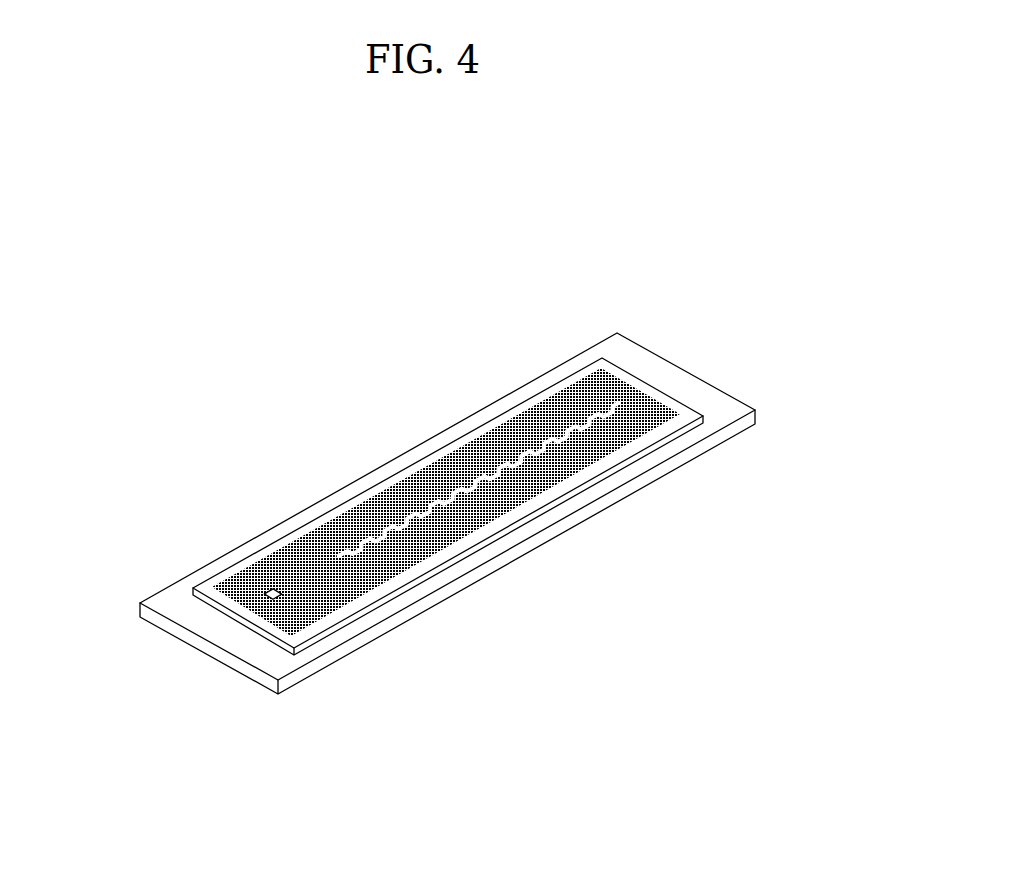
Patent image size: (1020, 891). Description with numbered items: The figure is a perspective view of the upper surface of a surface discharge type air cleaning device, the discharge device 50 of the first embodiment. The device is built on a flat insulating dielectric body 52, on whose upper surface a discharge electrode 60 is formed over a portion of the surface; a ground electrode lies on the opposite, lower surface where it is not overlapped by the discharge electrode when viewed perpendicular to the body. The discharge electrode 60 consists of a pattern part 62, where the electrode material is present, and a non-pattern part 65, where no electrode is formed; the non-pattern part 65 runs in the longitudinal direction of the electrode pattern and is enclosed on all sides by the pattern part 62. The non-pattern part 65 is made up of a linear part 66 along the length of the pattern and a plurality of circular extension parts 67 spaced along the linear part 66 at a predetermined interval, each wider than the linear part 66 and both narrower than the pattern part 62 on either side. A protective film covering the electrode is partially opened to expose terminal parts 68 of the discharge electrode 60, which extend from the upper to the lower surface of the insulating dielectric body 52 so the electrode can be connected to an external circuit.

The discharge device 50 is at (432, 481).
The insulating dielectric body 52 is at (222, 628).
The discharge electrode 60 is at (265, 546).
The pattern part 62 is at (387, 573).
The non-pattern part 65 is at (479, 380).
The linear part 66 is at (503, 430).
The circular extension parts 67 is at (568, 430).
The terminal part 68 is at (273, 602).